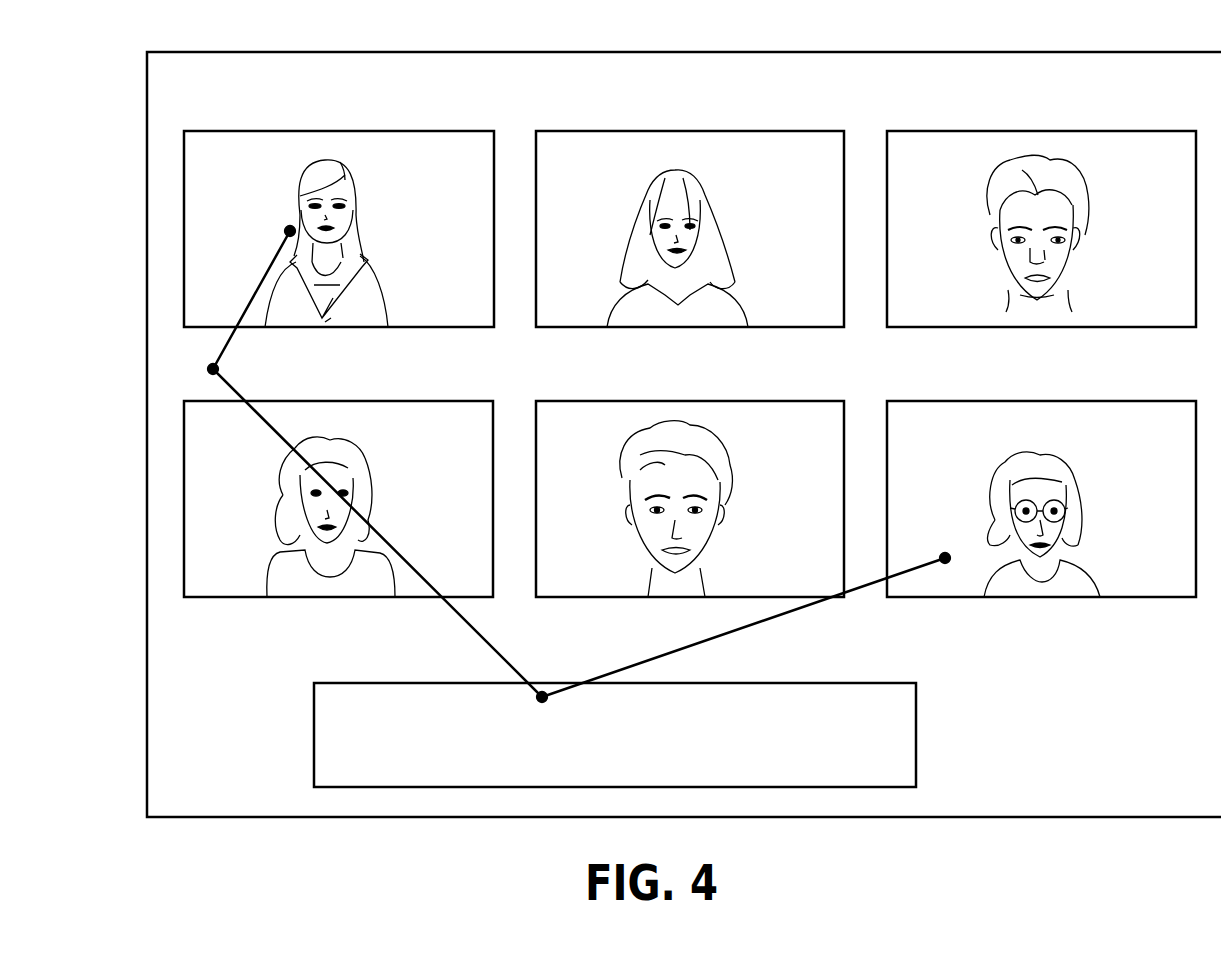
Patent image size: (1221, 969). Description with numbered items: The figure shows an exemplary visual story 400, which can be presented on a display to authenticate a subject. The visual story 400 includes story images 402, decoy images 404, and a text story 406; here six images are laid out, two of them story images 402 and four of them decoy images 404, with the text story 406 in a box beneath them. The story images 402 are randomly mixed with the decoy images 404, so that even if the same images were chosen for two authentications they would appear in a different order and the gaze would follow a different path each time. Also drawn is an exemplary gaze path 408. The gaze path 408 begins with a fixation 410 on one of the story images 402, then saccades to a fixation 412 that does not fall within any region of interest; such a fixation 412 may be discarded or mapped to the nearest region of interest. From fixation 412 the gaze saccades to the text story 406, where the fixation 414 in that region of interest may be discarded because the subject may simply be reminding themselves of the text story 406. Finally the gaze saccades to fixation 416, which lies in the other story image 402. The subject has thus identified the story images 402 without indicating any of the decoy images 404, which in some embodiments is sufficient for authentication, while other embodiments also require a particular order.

The visual story 400 is at (147, 527).
The story images 402 is at (387, 131).
The decoy images 404 is at (695, 131).
The text story 406 is at (916, 717).
The gaze path 408 is at (237, 388).
The fixation 410 is at (287, 228).
The fixation 412 is at (210, 369).
The third gaze point 414 is at (544, 692).
The fixation 416 is at (945, 555).